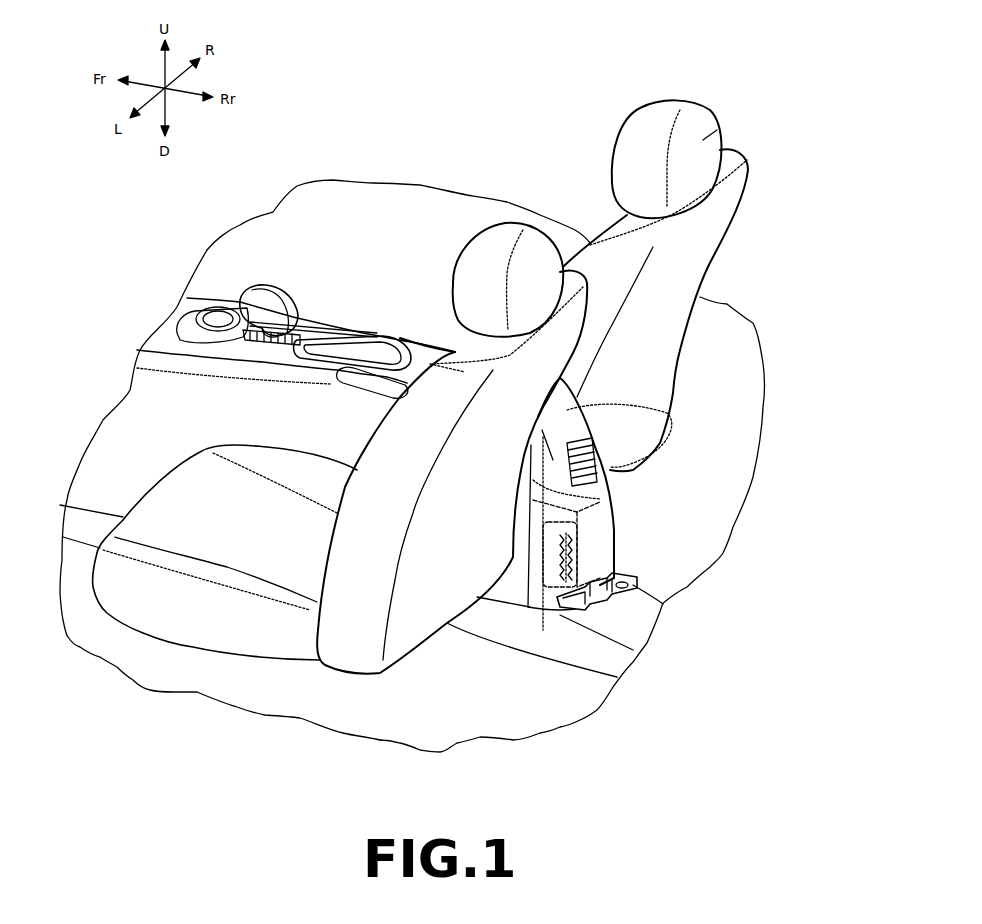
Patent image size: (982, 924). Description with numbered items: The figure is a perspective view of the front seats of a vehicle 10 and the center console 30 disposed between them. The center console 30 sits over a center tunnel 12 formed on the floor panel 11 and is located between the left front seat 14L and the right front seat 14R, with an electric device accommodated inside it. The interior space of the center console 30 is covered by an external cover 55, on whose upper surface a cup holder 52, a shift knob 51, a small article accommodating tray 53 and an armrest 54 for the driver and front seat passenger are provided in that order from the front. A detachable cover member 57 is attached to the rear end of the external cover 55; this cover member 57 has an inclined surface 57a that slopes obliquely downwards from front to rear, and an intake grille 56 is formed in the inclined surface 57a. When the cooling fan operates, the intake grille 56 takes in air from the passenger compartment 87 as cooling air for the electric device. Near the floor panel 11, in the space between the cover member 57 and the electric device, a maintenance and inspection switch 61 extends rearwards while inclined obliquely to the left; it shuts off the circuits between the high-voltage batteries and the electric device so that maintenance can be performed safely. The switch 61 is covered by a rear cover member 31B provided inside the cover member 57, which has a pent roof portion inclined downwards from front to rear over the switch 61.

The vehicle 10 is at (567, 63).
The floor panel 11 is at (710, 520).
The center tunnel 12 is at (640, 620).
The left front seat 14L is at (490, 253).
The right front seat 14R is at (718, 127).
The center console 30 is at (348, 326).
The shift knob 51 is at (283, 289).
The cup holder 52 is at (237, 312).
The small article accommodating tray 53 is at (355, 355).
The armrest 54 is at (423, 350).
The external cover 55 is at (160, 413).
The intake grille 56 is at (610, 467).
The detachable cover member 57 is at (607, 531).
The inclined surface 57a is at (567, 428).
The rear cover member 31B is at (590, 547).
The maintenance and inspection switch 61 is at (540, 590).
The passenger compartment 87 is at (640, 348).